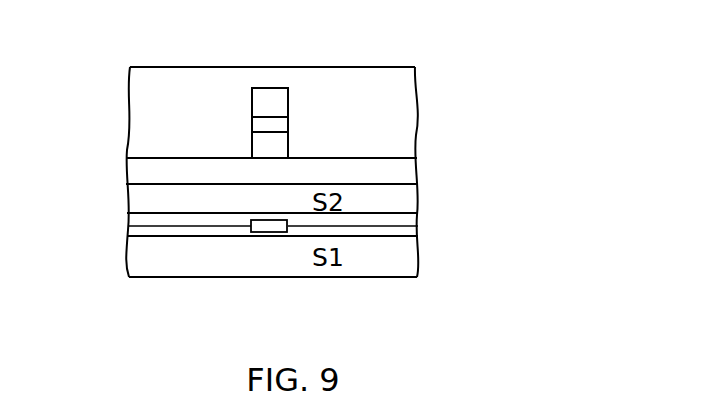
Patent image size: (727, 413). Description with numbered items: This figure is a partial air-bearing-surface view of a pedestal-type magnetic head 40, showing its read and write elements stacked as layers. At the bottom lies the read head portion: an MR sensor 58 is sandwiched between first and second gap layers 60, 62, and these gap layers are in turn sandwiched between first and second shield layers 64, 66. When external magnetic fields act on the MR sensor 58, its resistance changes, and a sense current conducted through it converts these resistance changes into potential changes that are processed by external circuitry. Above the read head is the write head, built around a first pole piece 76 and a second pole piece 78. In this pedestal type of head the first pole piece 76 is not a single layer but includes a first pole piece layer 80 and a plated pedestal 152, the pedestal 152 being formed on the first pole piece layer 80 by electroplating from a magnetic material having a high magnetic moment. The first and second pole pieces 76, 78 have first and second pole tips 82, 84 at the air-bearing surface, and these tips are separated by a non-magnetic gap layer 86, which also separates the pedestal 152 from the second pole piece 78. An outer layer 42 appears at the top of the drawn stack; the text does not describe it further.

The magnetic head 40 is at (443, 73).
The top layer 42 is at (137, 80).
The MR sensor 58 is at (271, 232).
The first gap layer 60 is at (152, 237).
The second gap layer 62 is at (380, 220).
The first shield layer 64 is at (393, 258).
The second shield layer 66 is at (135, 199).
The first pole piece 76 is at (427, 130).
The second pole piece 78 is at (252, 102).
The first pole piece layer 80 is at (135, 168).
The first pole tip 82 is at (288, 146).
The second pole tip 84 is at (288, 101).
The non-magnetic gap layer 86 is at (288, 124).
The pedestal 152 is at (252, 145).